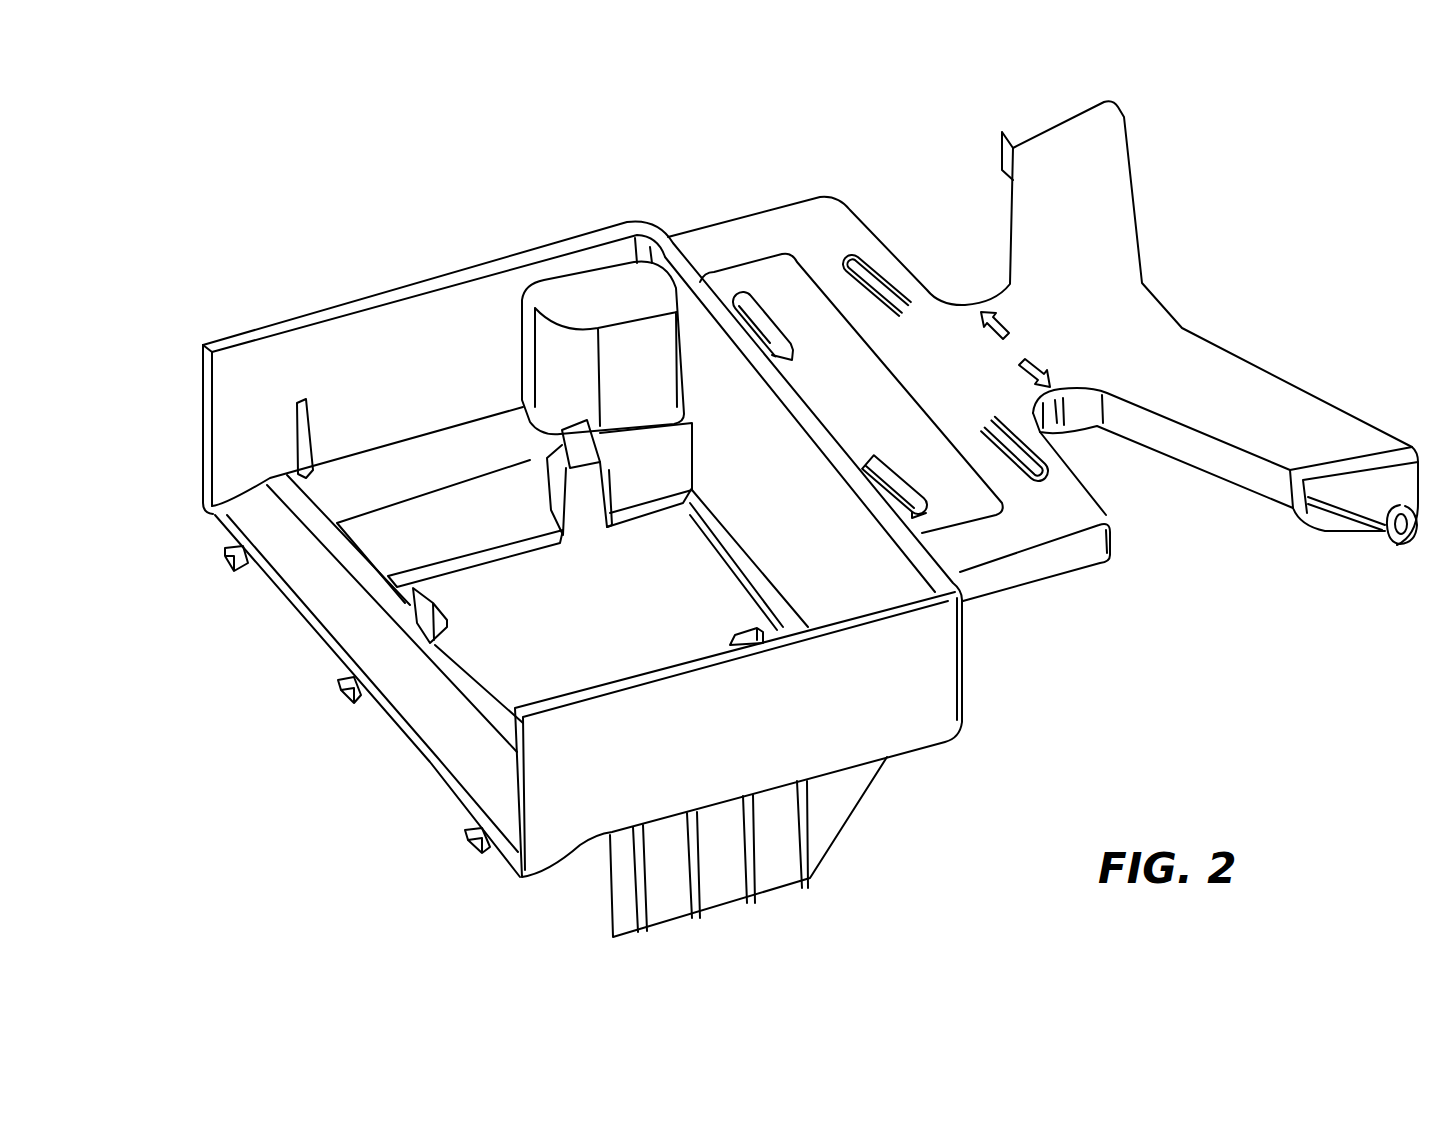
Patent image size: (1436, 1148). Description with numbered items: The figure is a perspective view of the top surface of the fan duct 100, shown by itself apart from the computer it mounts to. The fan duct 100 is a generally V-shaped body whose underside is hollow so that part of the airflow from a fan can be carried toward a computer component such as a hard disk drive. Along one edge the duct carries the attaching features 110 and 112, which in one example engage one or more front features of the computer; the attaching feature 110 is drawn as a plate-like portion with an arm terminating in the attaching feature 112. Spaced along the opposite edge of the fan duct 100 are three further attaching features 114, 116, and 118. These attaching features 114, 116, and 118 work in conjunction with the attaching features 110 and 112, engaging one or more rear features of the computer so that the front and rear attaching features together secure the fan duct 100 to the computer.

The fan duct 100 is at (1110, 85).
The attaching feature 110 is at (1098, 102).
The attaching feature 112 is at (1397, 548).
The attaching feature 114 is at (230, 565).
The attaching feature 116 is at (338, 698).
The attaching feature 118 is at (466, 845).